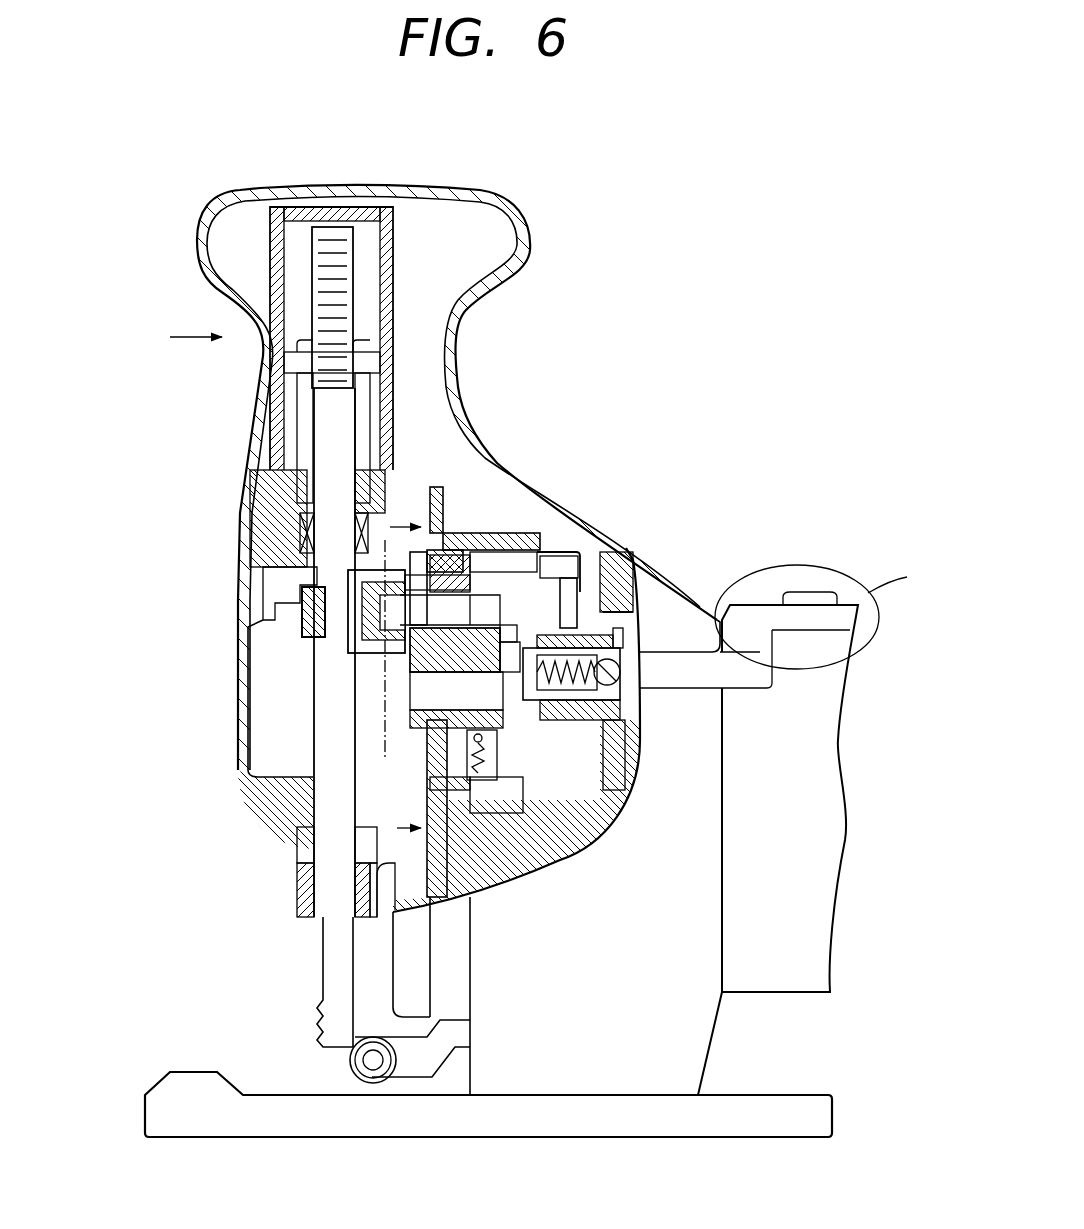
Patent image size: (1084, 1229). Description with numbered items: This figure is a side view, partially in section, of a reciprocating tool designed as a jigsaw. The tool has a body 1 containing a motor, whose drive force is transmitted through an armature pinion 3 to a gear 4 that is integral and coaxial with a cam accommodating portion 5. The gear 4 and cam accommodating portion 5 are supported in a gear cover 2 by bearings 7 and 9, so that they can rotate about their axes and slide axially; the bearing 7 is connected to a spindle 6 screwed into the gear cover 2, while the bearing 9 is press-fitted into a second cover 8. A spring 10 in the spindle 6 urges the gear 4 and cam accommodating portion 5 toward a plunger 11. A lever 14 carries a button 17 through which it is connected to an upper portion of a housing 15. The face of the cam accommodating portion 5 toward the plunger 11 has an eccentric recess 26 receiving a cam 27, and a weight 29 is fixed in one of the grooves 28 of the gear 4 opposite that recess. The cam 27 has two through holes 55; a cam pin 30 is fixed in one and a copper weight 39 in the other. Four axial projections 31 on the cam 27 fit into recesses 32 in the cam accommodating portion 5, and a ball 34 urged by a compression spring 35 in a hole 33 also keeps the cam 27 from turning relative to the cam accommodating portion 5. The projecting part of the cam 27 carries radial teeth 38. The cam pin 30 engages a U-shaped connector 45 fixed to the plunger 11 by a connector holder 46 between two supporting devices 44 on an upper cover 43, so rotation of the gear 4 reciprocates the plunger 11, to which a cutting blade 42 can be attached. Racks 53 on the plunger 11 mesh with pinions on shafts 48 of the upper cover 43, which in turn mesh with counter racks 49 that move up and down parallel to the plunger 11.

The body 1 is at (426, 172).
The gear cover 2 is at (522, 200).
The armature pinion 3 is at (575, 823).
The gear 4 is at (550, 563).
The cam accommodating portion 5 is at (478, 545).
The spindle 6 is at (632, 637).
The bearing 7 is at (635, 603).
The second cover 8 is at (435, 482).
The bearing 9 is at (455, 535).
The spring 10 is at (620, 703).
The plunger 11 is at (328, 685).
The lever 14 is at (762, 615).
The housing 15 is at (803, 752).
The button 17 is at (810, 597).
The eccentric recess 26 is at (497, 580).
The cam 27 is at (362, 647).
The grooves 28 is at (587, 637).
The weight 29 is at (627, 757).
The cam pin 30 is at (373, 620).
The axial projections 31 is at (583, 577).
The recesses 32 is at (603, 580).
The hole 33 is at (465, 762).
The ball 34 is at (548, 792).
The compression spring 35 is at (483, 787).
The teeth 38 is at (266, 815).
The weight 39 is at (420, 714).
The cutting blade 42 is at (337, 950).
The upper cover 43 is at (260, 532).
The supporting devices 44 is at (303, 520).
The connector 45 is at (317, 577).
The connector holder 46 is at (310, 598).
The shafts 48 is at (297, 367).
The counter racks 49 is at (303, 417).
The racks 53 is at (330, 258).
The through holes 55 is at (527, 573).